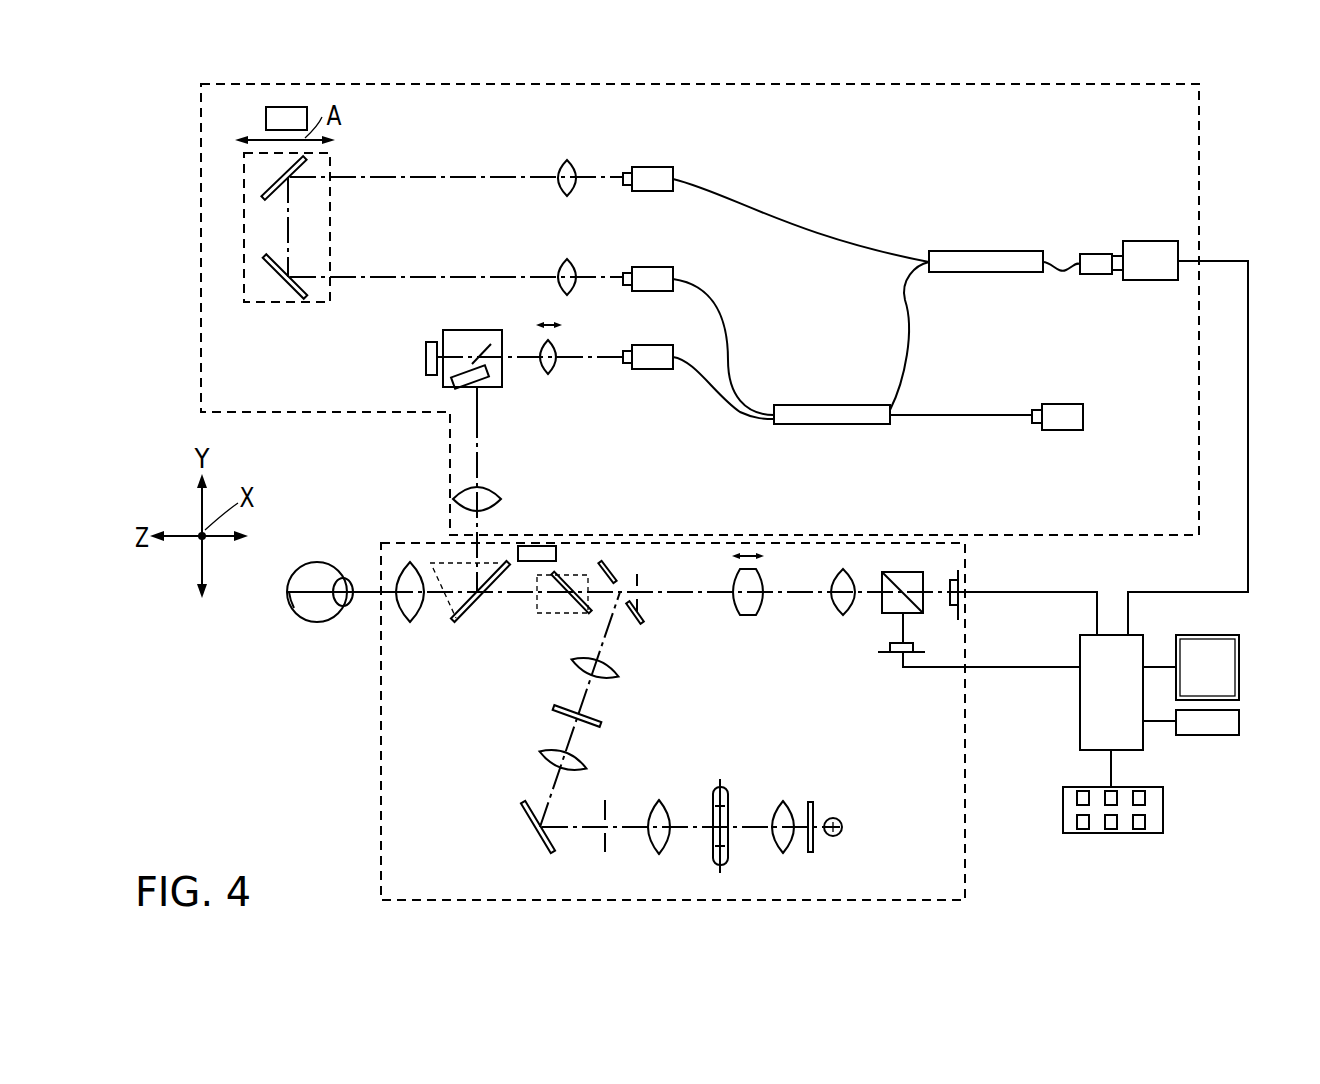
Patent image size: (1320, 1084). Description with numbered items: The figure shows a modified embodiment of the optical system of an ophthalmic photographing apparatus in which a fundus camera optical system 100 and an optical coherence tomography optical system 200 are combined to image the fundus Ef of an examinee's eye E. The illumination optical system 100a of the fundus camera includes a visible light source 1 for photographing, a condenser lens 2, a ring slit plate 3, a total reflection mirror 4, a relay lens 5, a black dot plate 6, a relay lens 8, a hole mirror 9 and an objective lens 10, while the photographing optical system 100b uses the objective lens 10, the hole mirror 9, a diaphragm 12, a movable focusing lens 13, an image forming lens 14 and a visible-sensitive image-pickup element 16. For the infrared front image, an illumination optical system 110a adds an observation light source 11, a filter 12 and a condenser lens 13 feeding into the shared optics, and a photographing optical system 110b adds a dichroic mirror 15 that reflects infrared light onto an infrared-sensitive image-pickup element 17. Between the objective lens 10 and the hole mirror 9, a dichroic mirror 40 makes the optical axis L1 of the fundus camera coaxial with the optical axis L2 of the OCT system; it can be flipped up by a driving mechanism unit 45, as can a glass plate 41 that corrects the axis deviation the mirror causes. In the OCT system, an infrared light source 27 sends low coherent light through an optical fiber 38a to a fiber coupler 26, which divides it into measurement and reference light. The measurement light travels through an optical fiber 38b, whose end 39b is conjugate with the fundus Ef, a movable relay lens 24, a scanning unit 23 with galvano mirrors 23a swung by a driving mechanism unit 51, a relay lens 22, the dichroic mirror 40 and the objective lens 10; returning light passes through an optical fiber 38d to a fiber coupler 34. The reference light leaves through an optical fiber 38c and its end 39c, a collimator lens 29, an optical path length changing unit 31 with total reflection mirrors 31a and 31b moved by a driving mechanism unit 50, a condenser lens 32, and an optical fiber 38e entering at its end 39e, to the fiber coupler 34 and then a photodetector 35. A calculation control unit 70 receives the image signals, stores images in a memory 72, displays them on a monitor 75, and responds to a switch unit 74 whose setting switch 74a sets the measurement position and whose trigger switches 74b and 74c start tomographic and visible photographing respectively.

The visible light source 1 is at (722, 787).
The condenser lens 2 is at (655, 838).
The ring slit plate 3 is at (603, 845).
The total reflection mirror 4 is at (528, 816).
The relay lens 5 is at (543, 755).
The black dot plate 6 is at (553, 707).
The relay lens 8 is at (606, 676).
The hole mirror 9 is at (633, 604).
The objective lens 10 is at (410, 560).
The light source for observation 11 is at (838, 818).
The filter 12 is at (642, 603).
The focusing lens 13 is at (760, 612).
The image forming lens 14 is at (845, 609).
The dichroic mirror 15 is at (895, 572).
The two-dimensional image-pickup element 16 is at (960, 592).
The two-dimensional image-pickup element for observation 17 is at (893, 655).
The relay lens 22 is at (500, 500).
The scanning unit 23 is at (492, 330).
The galvano mirrors 23a is at (462, 348).
The relay lens 24 is at (552, 376).
The fiber coupler 26 is at (808, 425).
The infrared light source 27 is at (1058, 404).
The collimator lens 29 is at (565, 261).
The optical path length changing unit 31 is at (313, 303).
The total reflection mirror 31a is at (270, 263).
The total reflection mirror 31b is at (270, 187).
The condenser lens 32 is at (565, 160).
The fiber coupler 34 is at (955, 251).
The photodetector 35 is at (1115, 240).
The optical fiber 38a is at (940, 420).
The optical fiber 38b is at (708, 376).
The optical fiber 38c is at (727, 326).
The optical fiber 38d is at (912, 336).
The optical fiber 38e is at (745, 206).
The end of optical fiber 39b is at (627, 348).
The end of optical fiber 39c is at (625, 276).
The end of optical fiber 39e is at (625, 176).
The dichroic mirror 40 is at (461, 624).
The glass plate 41 is at (561, 600).
The driving mechanism unit 45 is at (556, 546).
The driving mechanism unit 50 is at (277, 106).
The driving mechanism unit 51 is at (426, 356).
The calculation control unit 70 is at (1080, 700).
The memory 72 is at (1240, 721).
The switch unit 74 is at (1165, 807).
The setting switch 74a is at (1083, 800).
The trigger switch 74b is at (1108, 803).
The trigger switch 74c is at (1140, 803).
The monitor 75 is at (1240, 658).
The fundus camera optical system 100 is at (380, 826).
The illumination optical system 100a is at (502, 787).
The photographing optical system 100b is at (692, 658).
The illumination optical system 110a is at (810, 877).
The photographing optical system 110b is at (930, 718).
The optical coherence tomography optical system 200 is at (200, 262).
The examinee's eye E is at (315, 628).
The fundus Ef is at (293, 606).
The optical axis L1 is at (516, 604).
The optical axis L2 is at (479, 450).